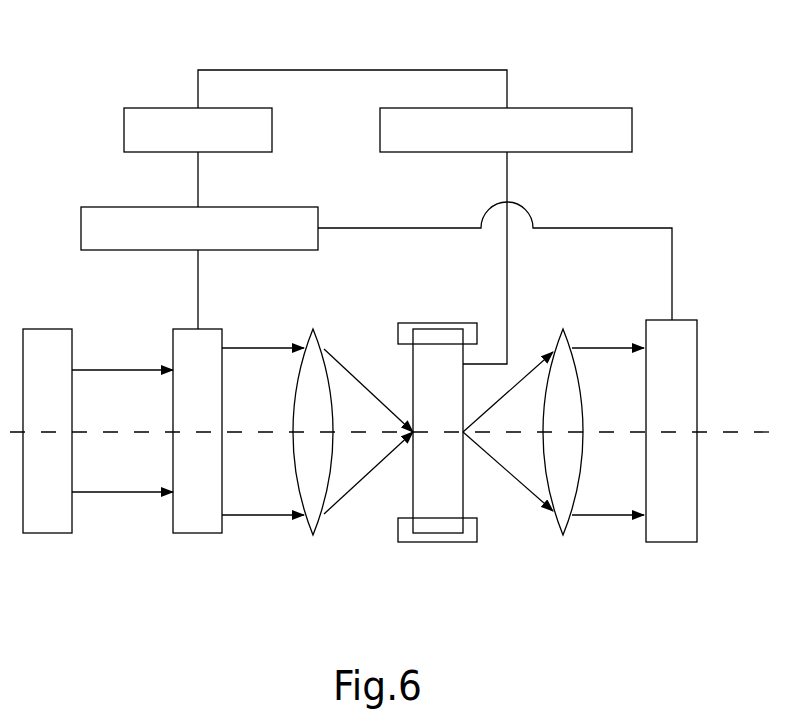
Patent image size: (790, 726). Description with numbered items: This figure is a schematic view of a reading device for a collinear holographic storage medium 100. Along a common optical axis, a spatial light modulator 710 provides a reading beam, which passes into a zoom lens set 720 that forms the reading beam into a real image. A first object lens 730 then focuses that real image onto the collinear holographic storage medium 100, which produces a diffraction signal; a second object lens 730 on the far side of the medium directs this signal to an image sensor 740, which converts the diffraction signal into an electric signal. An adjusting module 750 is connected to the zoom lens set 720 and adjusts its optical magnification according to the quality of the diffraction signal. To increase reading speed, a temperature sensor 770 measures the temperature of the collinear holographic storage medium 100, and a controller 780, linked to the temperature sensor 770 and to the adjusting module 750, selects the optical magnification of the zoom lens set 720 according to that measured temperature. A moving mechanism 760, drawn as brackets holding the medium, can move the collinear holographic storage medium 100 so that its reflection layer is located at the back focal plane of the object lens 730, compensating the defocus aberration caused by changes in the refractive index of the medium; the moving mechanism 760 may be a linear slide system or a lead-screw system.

The collinear holographic storage medium 100 is at (464, 497).
The spatial light modulator 710 is at (45, 535).
The zoom lens set 720 is at (196, 535).
The object lens 730 is at (312, 536).
The image sensor 740 is at (671, 543).
The adjusting module 750 is at (152, 206).
The moving mechanism 760 is at (427, 318).
The temperature sensor 770 is at (553, 107).
The controller 780 is at (152, 107).